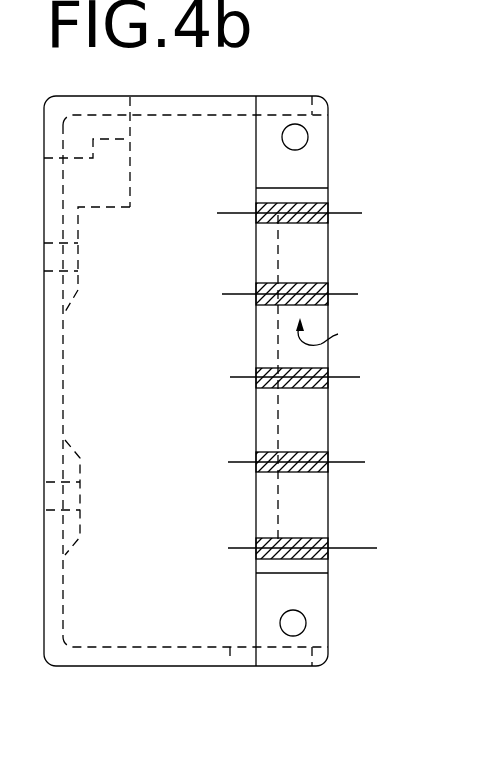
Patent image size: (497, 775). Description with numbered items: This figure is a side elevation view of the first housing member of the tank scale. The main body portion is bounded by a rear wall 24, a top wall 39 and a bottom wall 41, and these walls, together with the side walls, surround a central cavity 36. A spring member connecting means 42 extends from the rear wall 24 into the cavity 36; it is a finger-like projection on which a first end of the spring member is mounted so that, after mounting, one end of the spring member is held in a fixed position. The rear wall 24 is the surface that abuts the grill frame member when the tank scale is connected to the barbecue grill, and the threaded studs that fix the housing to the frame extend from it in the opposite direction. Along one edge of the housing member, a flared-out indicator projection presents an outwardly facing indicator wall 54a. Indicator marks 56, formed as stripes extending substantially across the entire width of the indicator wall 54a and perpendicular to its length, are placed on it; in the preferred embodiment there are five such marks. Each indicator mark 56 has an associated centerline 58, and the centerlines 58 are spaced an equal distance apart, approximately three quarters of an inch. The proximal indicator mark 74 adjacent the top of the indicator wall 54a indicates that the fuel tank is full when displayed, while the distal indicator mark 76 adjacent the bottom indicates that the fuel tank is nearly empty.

The rear wall 24 is at (65, 380).
The central cavity 36 is at (189, 352).
The top wall 39 is at (200, 118).
The bottom wall 41 is at (141, 645).
The spring member connecting means 42 is at (113, 208).
The indicator wall 54a is at (337, 331).
The indicator marks 56 is at (328, 287).
The centerline 58 is at (343, 213).
The proximal indicator mark 74 is at (328, 203).
The distal indicator mark 76 is at (330, 557).